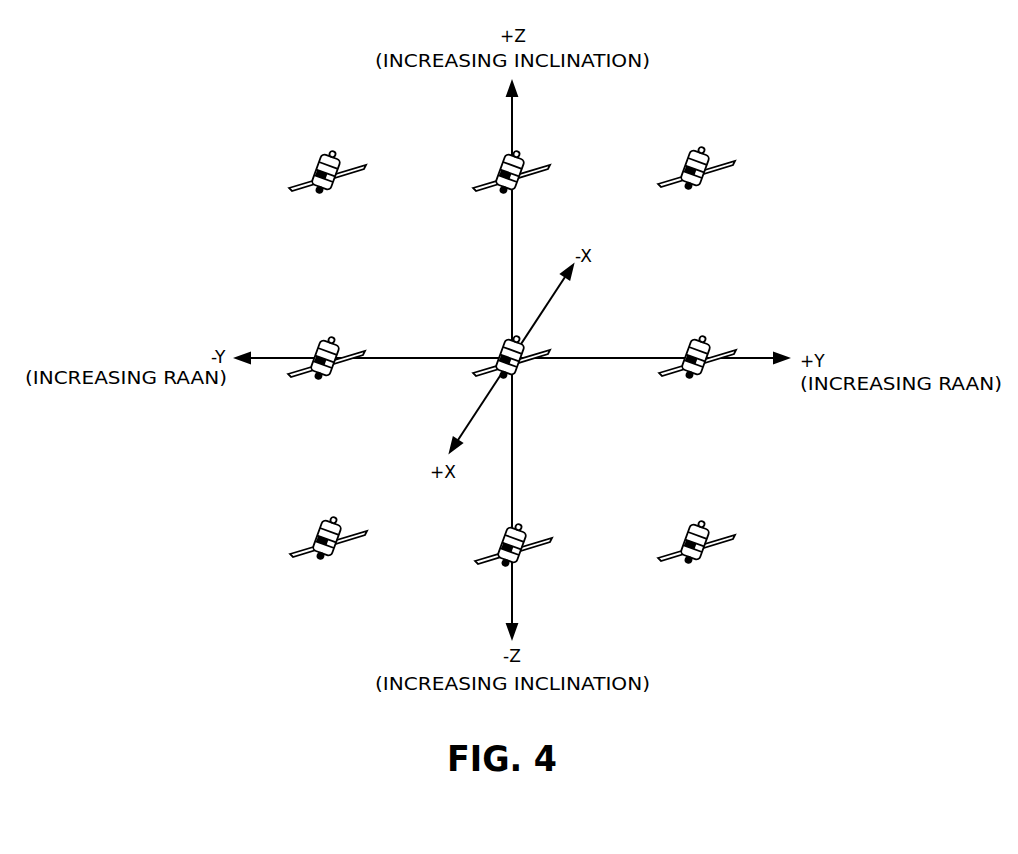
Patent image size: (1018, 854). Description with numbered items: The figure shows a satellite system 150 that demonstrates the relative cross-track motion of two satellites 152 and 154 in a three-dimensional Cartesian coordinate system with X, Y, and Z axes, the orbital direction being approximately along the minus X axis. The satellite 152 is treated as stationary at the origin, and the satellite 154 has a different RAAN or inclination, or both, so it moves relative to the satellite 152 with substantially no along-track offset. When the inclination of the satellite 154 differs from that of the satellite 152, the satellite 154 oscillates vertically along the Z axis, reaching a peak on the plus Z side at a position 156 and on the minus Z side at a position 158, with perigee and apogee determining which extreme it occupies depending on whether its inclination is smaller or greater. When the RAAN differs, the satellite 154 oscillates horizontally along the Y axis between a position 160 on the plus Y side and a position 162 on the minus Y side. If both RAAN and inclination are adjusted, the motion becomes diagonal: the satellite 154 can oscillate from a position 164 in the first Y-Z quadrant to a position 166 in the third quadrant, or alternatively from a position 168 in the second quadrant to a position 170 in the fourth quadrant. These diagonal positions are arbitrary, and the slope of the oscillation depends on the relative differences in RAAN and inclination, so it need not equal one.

The satellite system 150 is at (960, 116).
The satellite 152 is at (500, 345).
The satellite 154 is at (511, 354).
The position 156 is at (547, 135).
The position 158 is at (546, 579).
The position 160 is at (720, 395).
The position 162 is at (289, 395).
The position 164 is at (731, 134).
The position 166 is at (302, 575).
The position 168 is at (297, 140).
The position 170 is at (730, 577).